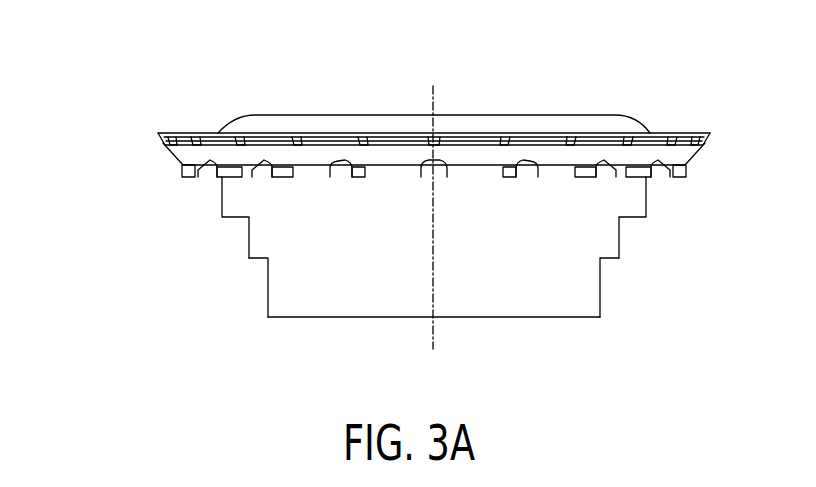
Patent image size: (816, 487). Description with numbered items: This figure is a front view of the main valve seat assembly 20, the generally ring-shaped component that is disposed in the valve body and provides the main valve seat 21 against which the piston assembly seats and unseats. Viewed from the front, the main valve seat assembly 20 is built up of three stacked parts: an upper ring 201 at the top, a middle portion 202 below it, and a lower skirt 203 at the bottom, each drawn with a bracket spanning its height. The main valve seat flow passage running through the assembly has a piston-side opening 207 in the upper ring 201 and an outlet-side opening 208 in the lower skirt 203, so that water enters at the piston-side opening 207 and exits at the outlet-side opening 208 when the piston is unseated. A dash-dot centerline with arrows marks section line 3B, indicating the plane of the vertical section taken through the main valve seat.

The main valve seat assembly 20 is at (592, 76).
The main valve seat 21 is at (528, 115).
The upper ring 201 is at (250, 115).
The middle portion 202 is at (249, 258).
The lower skirt 203 is at (268, 317).
The piston-side opening 207 is at (317, 115).
The outlet-side opening 208 is at (317, 317).
The section line 3B- 3B is at (460, 86).